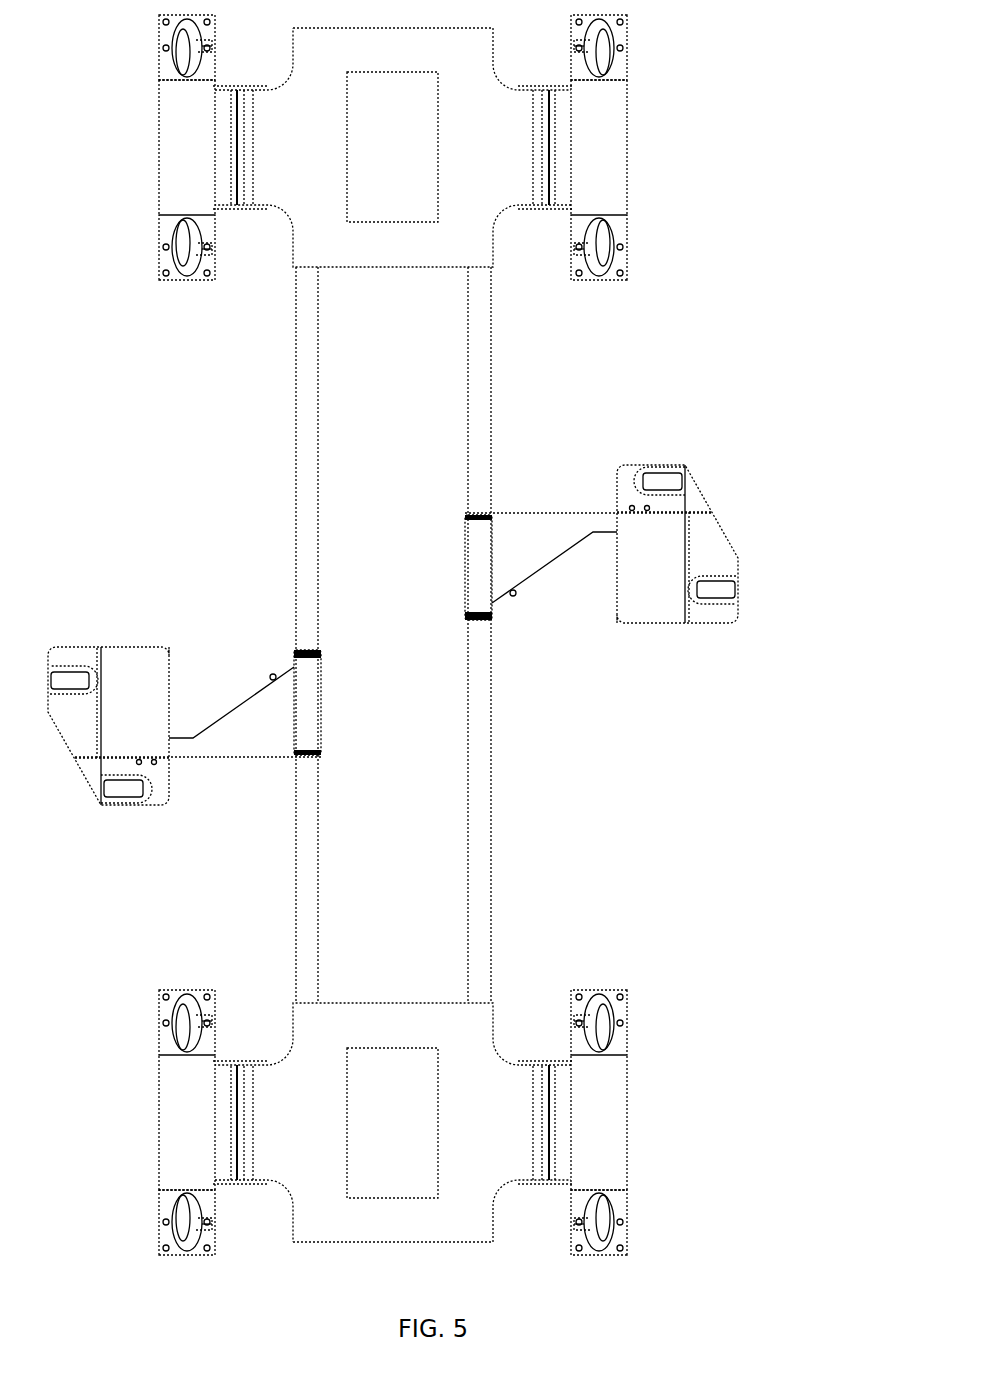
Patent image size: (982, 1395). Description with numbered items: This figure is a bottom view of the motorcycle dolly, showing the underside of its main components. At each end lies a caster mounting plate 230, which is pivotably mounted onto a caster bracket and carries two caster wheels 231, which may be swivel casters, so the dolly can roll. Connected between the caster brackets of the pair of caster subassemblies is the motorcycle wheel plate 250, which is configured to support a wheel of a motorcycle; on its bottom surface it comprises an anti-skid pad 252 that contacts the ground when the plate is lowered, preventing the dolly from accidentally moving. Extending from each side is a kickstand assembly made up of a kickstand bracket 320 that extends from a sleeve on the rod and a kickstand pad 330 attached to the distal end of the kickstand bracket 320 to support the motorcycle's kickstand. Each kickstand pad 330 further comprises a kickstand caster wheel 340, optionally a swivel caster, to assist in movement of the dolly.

The caster mounting plate 230 is at (607, 150).
The caster wheel 231 is at (620, 52).
The motorcycle wheel plate 250 is at (327, 1227).
The anti-skid pad 252 is at (390, 1180).
The kickstand bracket 320 is at (555, 527).
The kickstand pad 330 is at (705, 533).
The kickstand caster wheel 340 is at (742, 588).